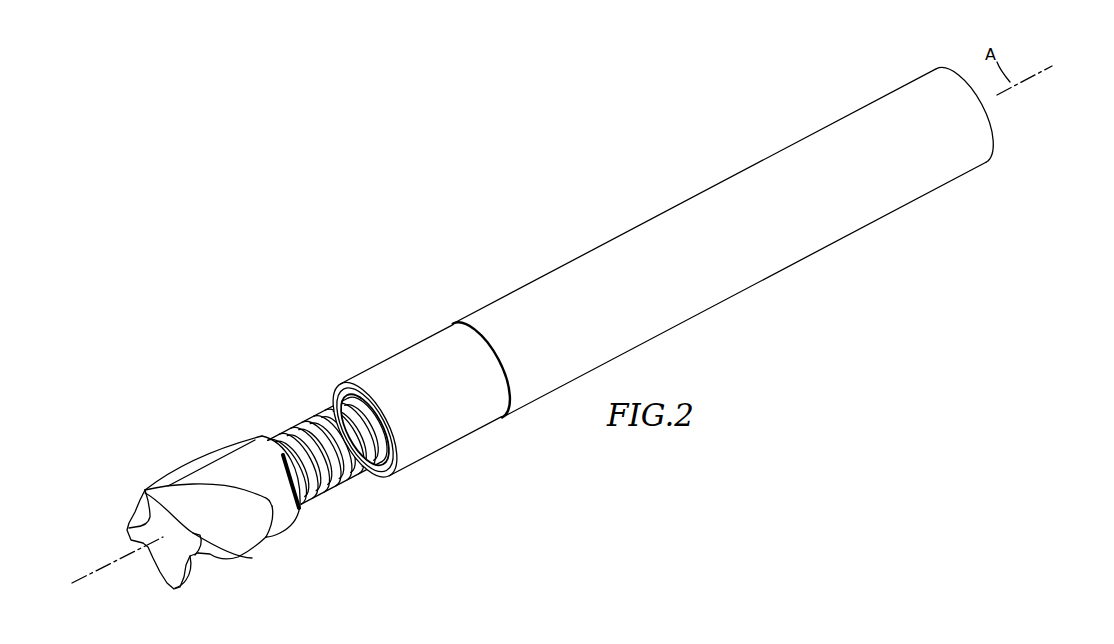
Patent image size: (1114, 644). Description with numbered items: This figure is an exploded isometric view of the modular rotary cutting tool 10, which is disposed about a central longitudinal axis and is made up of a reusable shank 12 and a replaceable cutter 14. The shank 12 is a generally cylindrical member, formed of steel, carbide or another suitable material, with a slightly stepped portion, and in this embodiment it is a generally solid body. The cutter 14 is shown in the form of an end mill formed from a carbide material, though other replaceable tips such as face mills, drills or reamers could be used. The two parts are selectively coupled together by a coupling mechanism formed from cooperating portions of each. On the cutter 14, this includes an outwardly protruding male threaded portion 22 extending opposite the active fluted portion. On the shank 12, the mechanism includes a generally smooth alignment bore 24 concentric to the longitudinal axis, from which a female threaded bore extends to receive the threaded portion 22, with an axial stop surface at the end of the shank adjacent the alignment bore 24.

The modular rotary cutting tool 10 is at (378, 238).
The shank 12 is at (566, 230).
The cutter 14 is at (180, 438).
The male threaded portion 22 is at (336, 494).
The alignment bore 24 is at (344, 397).